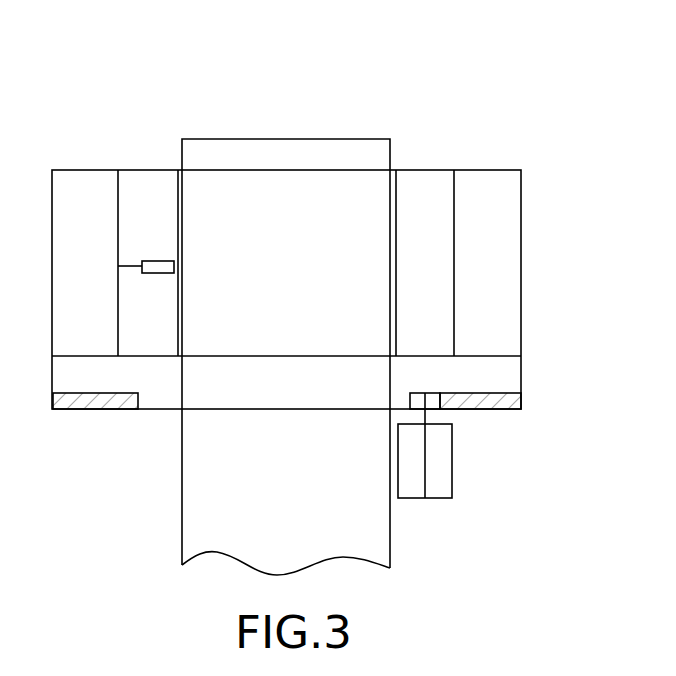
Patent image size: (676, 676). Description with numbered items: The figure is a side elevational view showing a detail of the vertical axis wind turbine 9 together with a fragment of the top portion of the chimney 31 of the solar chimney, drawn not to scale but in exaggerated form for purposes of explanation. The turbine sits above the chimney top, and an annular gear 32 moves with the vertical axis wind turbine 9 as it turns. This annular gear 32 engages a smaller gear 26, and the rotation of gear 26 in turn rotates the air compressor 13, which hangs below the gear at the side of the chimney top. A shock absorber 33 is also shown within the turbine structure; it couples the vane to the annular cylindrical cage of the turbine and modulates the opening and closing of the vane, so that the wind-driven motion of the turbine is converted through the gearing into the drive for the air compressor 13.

The vertical axis wind turbine 9 is at (497, 232).
The top portion of the chimney 31 is at (302, 225).
The shock absorber 33 is at (160, 260).
The annular gear 32 is at (77, 404).
The gear 26 is at (425, 400).
The air compressor 13 is at (440, 477).